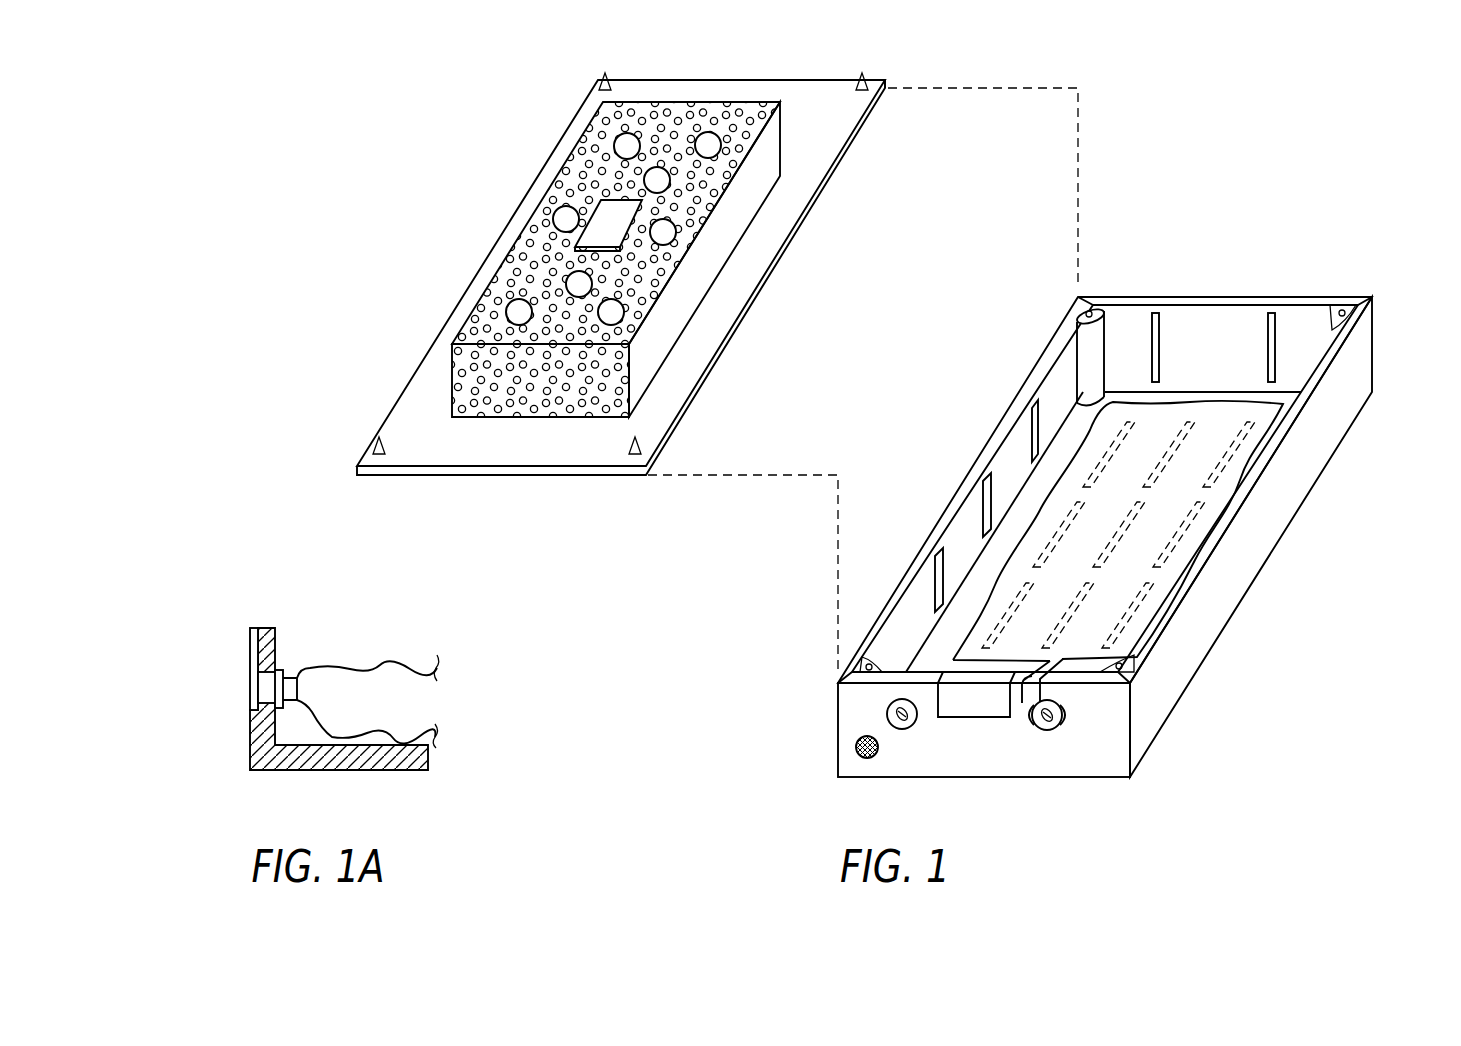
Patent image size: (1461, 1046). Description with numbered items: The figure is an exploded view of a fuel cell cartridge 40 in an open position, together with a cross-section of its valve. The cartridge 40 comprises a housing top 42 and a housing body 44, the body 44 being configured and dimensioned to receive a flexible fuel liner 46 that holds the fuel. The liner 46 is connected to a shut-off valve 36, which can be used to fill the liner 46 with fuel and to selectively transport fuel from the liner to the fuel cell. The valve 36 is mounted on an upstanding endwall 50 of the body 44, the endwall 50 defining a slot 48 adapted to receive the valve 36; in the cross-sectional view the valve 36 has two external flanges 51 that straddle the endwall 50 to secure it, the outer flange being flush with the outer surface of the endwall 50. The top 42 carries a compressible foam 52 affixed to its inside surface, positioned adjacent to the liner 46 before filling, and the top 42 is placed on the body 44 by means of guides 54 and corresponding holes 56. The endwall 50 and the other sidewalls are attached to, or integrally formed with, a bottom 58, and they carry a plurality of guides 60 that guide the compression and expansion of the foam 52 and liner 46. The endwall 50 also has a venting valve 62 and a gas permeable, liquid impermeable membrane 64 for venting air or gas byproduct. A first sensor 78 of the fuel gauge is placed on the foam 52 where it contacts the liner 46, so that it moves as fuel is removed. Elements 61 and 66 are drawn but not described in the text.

In FIG. 1, the shut-off valve 36 is at (1062, 715).
In FIG. 1A, the shut-off valve 36 is at (295, 664).
In FIG. 1, the cartridge 40 is at (1270, 128).
In FIG. 1, the housing top 42 is at (504, 164).
In FIG. 1, the housing body 44 is at (1250, 278).
In FIG. 1A, the housing body 44 is at (288, 756).
In FIG. 1, the fuel liner 46 is at (1248, 447).
In FIG. 1A, the fuel liner 46 is at (377, 709).
In FIG. 1, the slot 48 is at (1030, 679).
In FIG. 1, the endwall 50 is at (920, 757).
In FIG. 1A, the endwall 50 is at (236, 720).
In FIG. 1A, the external flanges 51 is at (278, 677).
In FIG. 1, the compressible foam 52 is at (657, 339).
In FIG. 1, the guides 54 is at (868, 90).
In FIG. 1, the holes 56 is at (1092, 310).
In FIG. 1, the bottom 58 is at (1337, 449).
In FIG. 1, the guides 60 is at (1158, 328).
In FIG. 1, the aperture 61 is at (1180, 527).
In FIG. 1, the venting valve 62 is at (887, 712).
In FIG. 1, the membrane 64 is at (856, 747).
In FIG. 1, the opening 66 is at (960, 703).
In FIG. 1, the first sensor 78 is at (605, 241).